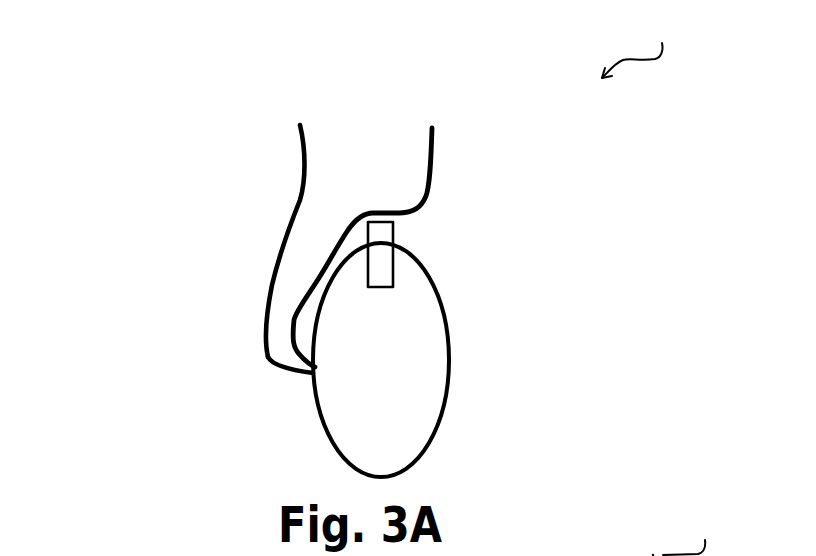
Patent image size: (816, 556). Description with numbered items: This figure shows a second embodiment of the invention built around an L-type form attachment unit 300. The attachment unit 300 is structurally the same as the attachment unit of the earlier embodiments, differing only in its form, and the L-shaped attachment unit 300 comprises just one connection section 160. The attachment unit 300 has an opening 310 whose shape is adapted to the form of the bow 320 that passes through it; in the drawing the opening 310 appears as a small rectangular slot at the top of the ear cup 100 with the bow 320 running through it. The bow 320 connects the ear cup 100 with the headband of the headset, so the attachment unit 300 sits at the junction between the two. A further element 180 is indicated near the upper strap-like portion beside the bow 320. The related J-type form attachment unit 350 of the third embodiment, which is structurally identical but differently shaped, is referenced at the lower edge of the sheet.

The ear cup 100 is at (408, 415).
The connection section 160 is at (308, 382).
The strap 180 is at (335, 153).
The L-type form attachment unit 300 is at (648, 44).
The opening 310 is at (405, 237).
The bow 320 is at (328, 245).
The J-type form attachment unit 350 is at (695, 532).